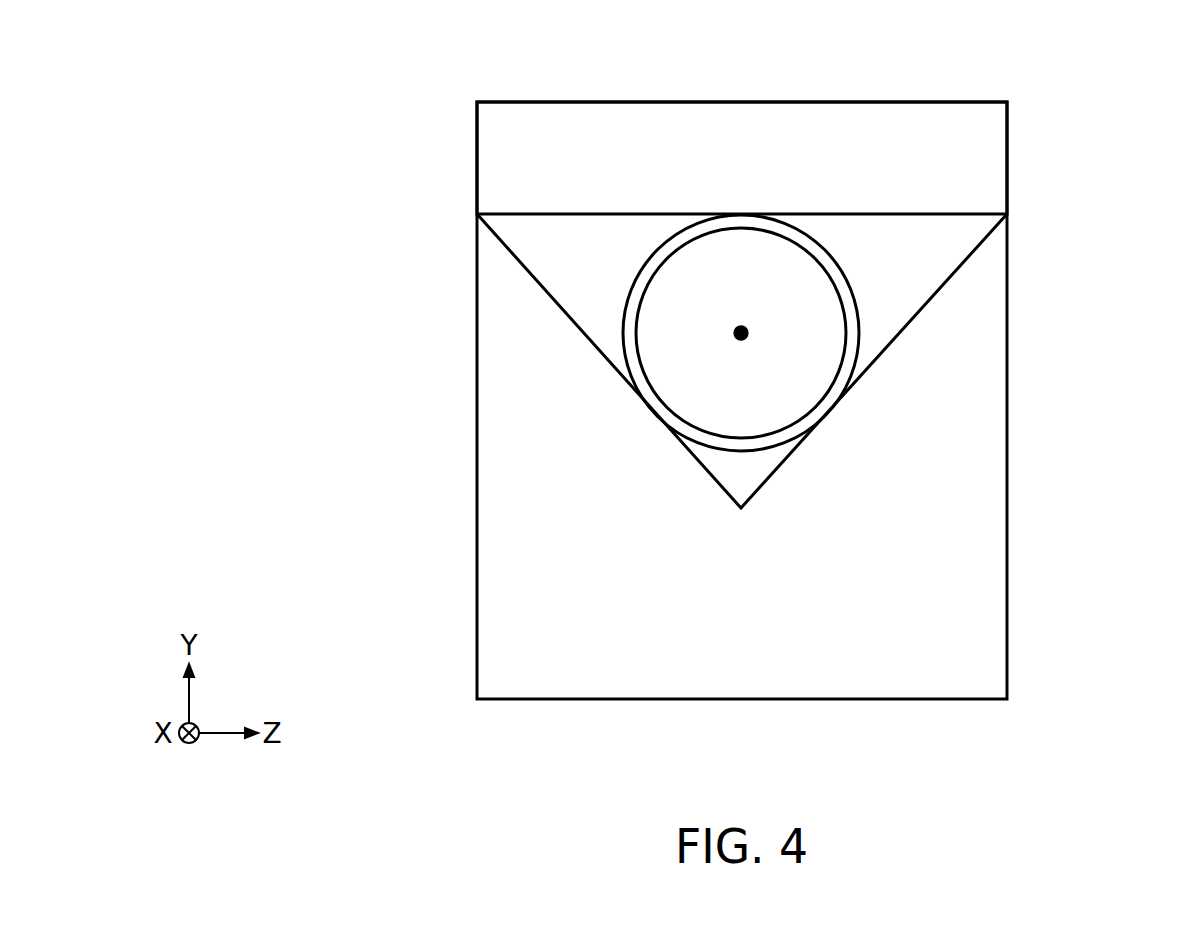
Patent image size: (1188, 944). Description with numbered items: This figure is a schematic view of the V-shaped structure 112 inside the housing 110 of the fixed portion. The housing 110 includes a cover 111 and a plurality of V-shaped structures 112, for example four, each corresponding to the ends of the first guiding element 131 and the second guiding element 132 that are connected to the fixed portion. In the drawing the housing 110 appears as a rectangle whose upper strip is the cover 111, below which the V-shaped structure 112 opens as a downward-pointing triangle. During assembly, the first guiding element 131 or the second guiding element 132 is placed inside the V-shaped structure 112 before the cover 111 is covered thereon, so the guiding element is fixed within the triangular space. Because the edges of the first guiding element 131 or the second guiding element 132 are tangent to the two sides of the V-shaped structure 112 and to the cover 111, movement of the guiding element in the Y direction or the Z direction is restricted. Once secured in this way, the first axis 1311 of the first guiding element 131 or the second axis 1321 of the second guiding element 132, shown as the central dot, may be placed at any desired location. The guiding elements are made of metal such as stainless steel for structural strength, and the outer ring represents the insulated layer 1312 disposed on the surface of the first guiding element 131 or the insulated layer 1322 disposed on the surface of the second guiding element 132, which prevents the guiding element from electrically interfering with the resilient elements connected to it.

The housing 110 is at (492, 578).
The cover 111 is at (492, 156).
The V-shaped structure 112 is at (903, 297).
The first guiding element 131 is at (582, 336).
The second guiding element 132 is at (680, 377).
The first axis 1311 is at (735, 184).
The second axis 1321 is at (741, 326).
The insulated layer 1312 is at (570, 333).
The insulated layer 1322 is at (633, 277).